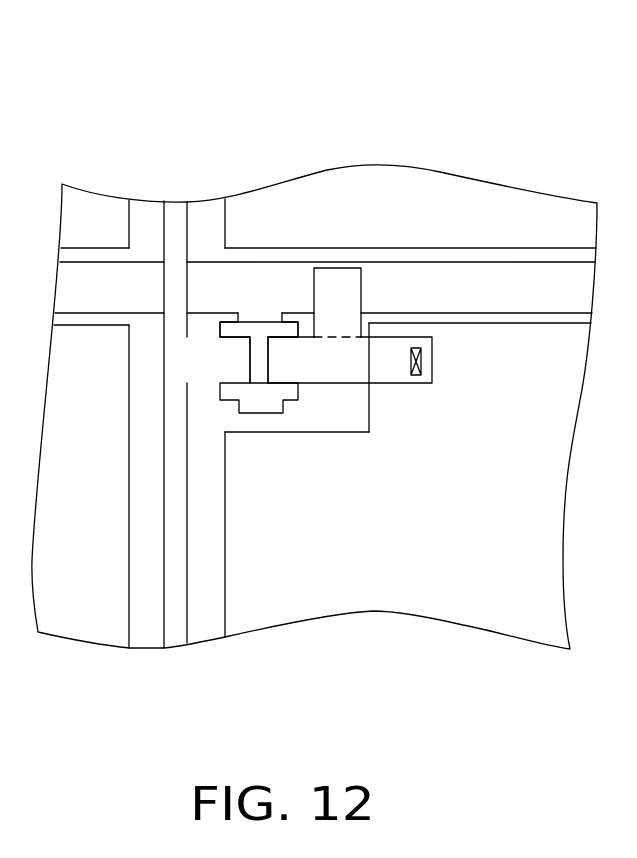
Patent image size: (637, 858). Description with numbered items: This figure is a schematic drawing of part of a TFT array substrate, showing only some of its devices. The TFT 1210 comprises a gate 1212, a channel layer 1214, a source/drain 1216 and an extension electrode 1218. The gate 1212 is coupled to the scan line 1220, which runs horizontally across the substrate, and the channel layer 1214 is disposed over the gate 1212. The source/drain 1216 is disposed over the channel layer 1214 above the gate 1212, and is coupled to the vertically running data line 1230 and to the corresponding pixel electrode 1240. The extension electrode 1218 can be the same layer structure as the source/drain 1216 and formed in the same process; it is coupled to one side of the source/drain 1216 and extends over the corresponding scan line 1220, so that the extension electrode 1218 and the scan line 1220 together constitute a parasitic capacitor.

The TFT 1210 is at (418, 73).
The gate 1212 is at (252, 408).
The channel layer 1214 is at (252, 330).
The source/drain 1216 is at (300, 350).
The extension electrode 1218 is at (350, 280).
The scan line 1220 is at (473, 290).
The data line 1230 is at (172, 228).
The pixel electrode 1240 is at (522, 368).